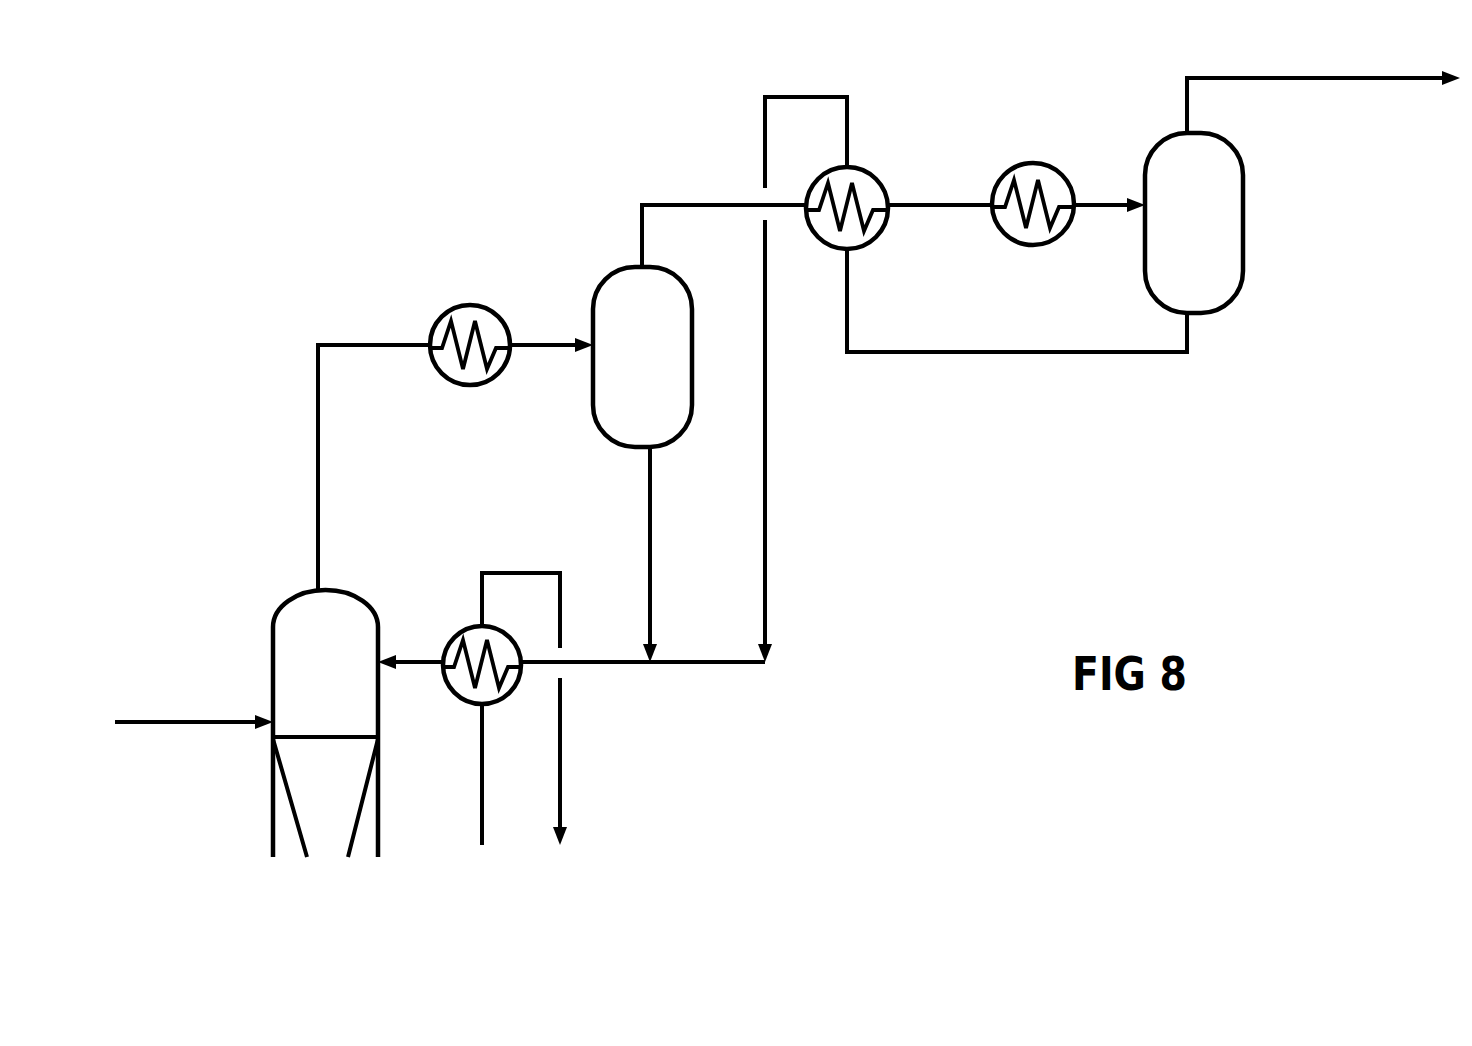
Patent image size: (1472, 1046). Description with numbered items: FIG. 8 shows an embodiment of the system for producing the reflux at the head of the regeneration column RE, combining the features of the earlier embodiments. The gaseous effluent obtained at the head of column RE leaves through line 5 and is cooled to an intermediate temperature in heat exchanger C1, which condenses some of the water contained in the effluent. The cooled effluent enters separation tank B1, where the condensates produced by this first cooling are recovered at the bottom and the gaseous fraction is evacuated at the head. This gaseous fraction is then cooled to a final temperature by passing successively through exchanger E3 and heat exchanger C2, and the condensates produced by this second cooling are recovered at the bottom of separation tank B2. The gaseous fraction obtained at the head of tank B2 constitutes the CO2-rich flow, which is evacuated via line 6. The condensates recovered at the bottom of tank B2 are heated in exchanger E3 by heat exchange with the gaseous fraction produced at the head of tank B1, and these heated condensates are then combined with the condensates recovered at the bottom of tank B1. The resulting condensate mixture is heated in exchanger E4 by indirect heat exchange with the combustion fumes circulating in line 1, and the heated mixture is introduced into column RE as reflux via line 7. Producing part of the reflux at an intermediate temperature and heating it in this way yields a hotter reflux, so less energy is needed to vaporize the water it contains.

The regeneration column RE is at (265, 832).
The line 5 is at (316, 470).
The heat exchanger C1 is at (474, 298).
The separation tank B1 is at (603, 434).
The heat exchanger E3 is at (872, 242).
The heat exchanger C2 is at (1030, 163).
The separation tank B2 is at (1243, 225).
The line 6 is at (1278, 78).
The exchanger E4 is at (456, 630).
The line 1 is at (482, 788).
The line 7 is at (413, 672).